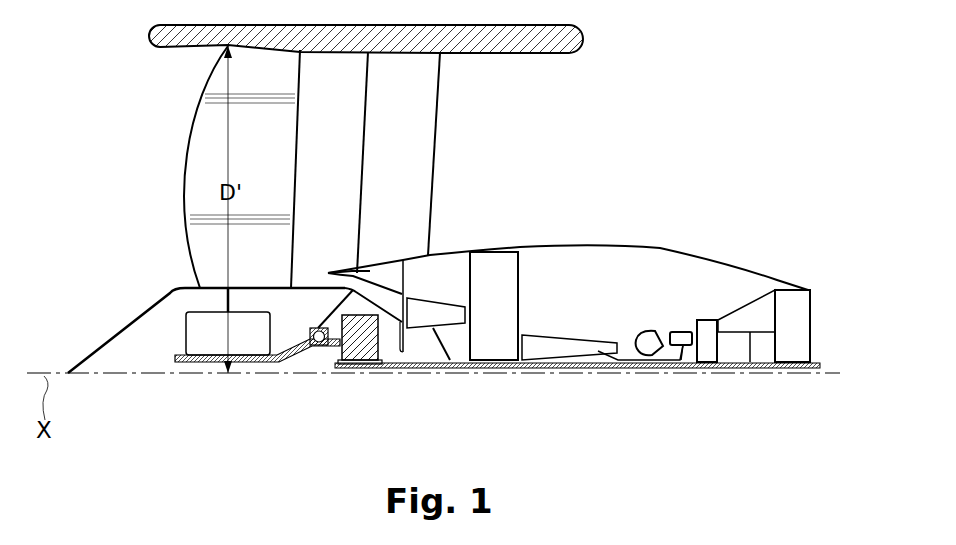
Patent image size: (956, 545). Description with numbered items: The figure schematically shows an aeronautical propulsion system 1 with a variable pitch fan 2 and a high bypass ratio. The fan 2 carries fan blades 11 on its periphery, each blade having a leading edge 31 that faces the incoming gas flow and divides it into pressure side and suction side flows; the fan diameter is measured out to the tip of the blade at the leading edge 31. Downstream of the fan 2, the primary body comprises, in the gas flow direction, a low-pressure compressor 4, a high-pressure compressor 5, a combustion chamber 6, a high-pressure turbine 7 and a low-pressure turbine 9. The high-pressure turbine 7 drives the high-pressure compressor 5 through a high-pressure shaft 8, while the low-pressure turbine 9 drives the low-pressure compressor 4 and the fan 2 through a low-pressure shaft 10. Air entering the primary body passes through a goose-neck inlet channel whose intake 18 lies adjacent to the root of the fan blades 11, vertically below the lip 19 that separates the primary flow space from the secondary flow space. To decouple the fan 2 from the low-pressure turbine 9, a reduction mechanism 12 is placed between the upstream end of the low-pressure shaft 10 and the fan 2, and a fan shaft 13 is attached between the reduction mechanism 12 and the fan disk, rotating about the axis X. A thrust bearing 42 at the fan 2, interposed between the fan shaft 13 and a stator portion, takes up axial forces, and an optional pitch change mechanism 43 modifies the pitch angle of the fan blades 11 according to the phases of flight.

The propulsion system 1 is at (700, 240).
The fan 2 is at (140, 248).
The low-pressure compressor 4 is at (436, 329).
The high-pressure compressor 5 is at (569, 347).
The combustion chamber 6 is at (645, 356).
The high-pressure turbine 7 is at (684, 348).
The high-pressure shaft 8 is at (606, 363).
The low-pressure turbine 9 is at (746, 326).
The low-pressure shaft 10 is at (410, 369).
The fan blades 11 is at (242, 159).
The reduction mechanism 12 is at (360, 366).
The fan shaft 13 is at (205, 363).
The intake 18 is at (323, 281).
The lip 19 is at (337, 272).
The leading edge 31 is at (194, 102).
The thrust bearing 42 is at (317, 349).
The pitch change mechanism 43 is at (193, 333).